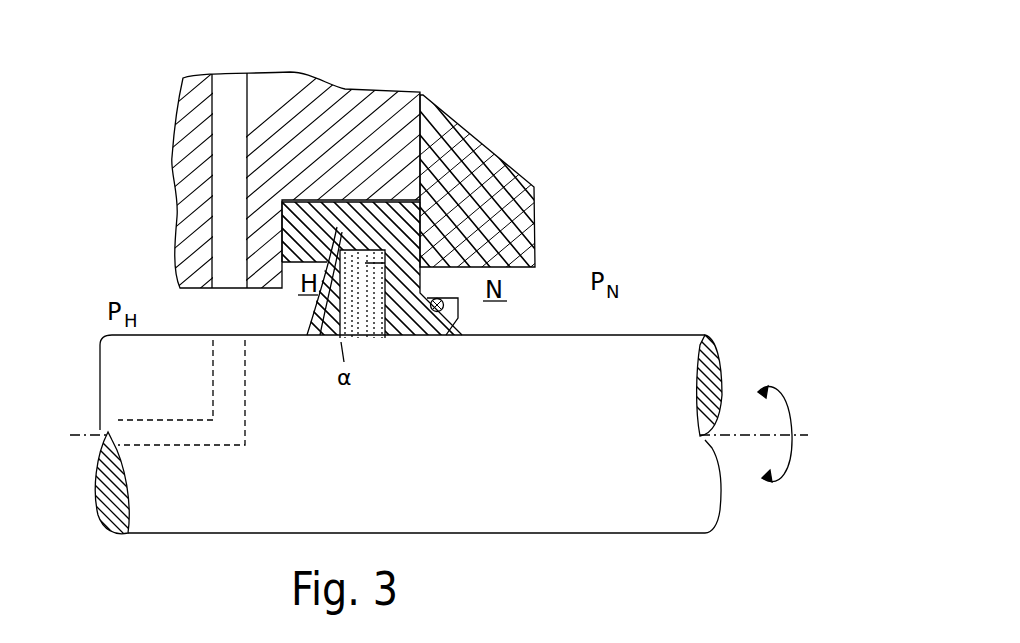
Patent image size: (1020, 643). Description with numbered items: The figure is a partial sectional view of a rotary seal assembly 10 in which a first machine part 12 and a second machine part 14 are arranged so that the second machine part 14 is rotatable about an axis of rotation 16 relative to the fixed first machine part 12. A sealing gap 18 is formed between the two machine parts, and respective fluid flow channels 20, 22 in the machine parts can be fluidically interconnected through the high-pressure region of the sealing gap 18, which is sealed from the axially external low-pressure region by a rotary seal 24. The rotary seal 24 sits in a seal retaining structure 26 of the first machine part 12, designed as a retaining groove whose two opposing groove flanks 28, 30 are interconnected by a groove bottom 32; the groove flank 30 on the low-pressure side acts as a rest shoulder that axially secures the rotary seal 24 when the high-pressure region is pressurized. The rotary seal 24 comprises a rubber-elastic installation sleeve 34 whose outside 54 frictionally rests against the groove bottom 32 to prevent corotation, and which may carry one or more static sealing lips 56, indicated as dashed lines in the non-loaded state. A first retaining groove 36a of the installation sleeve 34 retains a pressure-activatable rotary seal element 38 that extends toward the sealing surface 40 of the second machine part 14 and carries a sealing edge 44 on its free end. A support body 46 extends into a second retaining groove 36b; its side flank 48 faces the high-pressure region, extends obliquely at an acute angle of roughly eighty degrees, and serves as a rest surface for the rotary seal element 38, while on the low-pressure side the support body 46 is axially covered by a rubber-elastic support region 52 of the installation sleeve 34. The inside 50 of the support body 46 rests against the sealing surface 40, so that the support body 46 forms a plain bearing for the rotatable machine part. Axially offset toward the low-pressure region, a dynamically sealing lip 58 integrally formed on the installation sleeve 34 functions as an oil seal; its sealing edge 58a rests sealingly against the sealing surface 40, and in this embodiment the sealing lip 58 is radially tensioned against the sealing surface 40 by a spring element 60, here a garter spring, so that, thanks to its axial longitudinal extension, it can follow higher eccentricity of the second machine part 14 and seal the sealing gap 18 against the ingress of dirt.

The rotary seal assembly 10 is at (558, 95).
The first machine part 12 is at (291, 105).
The second machine part 14 is at (575, 446).
The axis of rotation 16 is at (735, 433).
The sealing gap 18 is at (575, 301).
The fluid flow channel 20 is at (222, 120).
The fluid flow channel 22 is at (132, 428).
The rotary seal 24 is at (422, 200).
The seal retaining structure 26 is at (282, 222).
The groove flank 28 is at (284, 290).
The groove flank 30 is at (410, 262).
The groove bottom 32 is at (457, 124).
The installation sleeve 34 is at (320, 200).
The first retaining groove 36a is at (330, 245).
The second retaining groove 36b is at (352, 345).
The rotary seal element 38 is at (313, 330).
The sealing surface 40 is at (633, 336).
The sealing edge 44 is at (330, 342).
The support body 46 is at (364, 340).
The side flank 48 is at (317, 300).
The inside 50 is at (394, 345).
The support region 52 is at (392, 305).
The outside 54 is at (357, 200).
The static sealing lip 56 is at (398, 200).
The sealing lip 58 is at (456, 333).
The sealing edge 58a is at (446, 338).
The spring element 60 is at (457, 300).